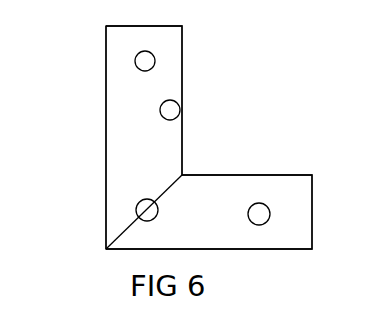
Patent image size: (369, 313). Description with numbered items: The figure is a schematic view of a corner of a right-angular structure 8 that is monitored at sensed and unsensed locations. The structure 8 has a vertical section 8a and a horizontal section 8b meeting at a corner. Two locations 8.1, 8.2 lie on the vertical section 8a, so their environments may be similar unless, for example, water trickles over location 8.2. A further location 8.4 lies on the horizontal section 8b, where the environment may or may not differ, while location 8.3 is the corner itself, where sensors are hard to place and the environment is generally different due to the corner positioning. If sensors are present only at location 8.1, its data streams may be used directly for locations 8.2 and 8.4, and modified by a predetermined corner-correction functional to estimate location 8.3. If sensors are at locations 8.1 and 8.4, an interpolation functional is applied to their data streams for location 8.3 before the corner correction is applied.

The right-angular structure 8 is at (272, 102).
The vertical section 8a is at (117, 92).
The horizontal section 8b is at (290, 233).
The location 8.1 is at (150, 58).
The location 8.2 is at (172, 110).
The location 8.3 is at (147, 208).
The location 8.4 is at (260, 213).